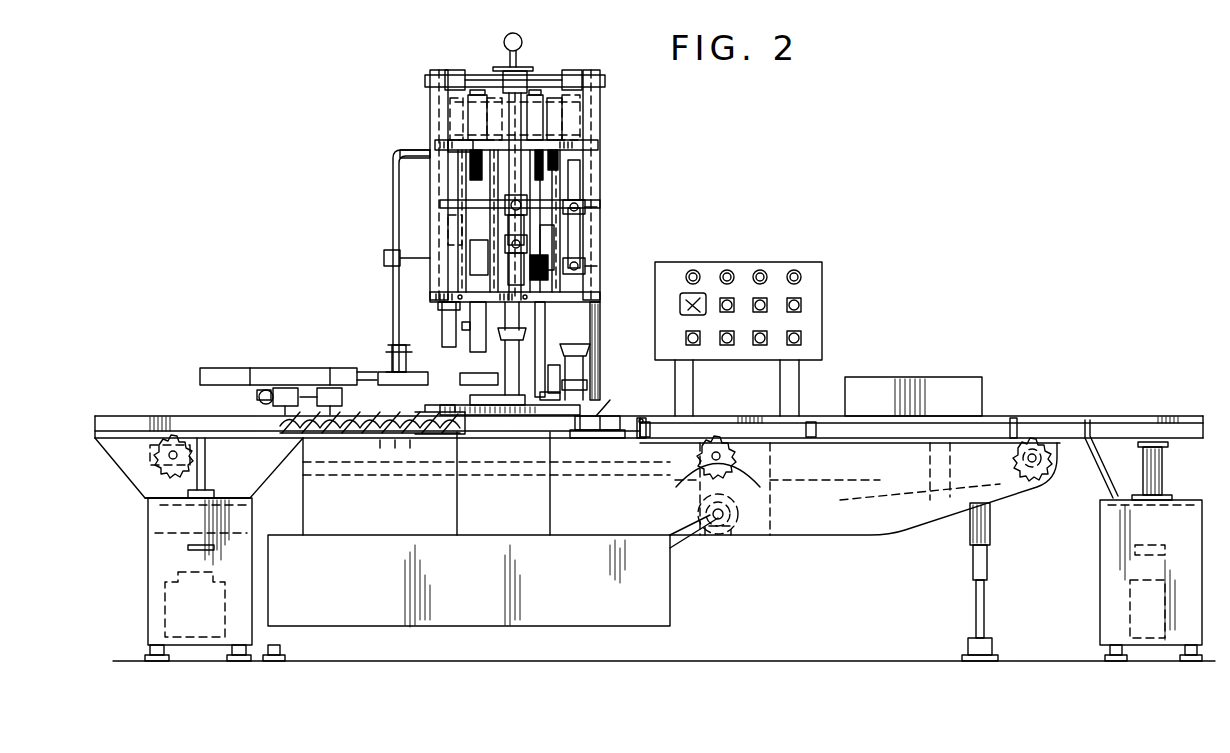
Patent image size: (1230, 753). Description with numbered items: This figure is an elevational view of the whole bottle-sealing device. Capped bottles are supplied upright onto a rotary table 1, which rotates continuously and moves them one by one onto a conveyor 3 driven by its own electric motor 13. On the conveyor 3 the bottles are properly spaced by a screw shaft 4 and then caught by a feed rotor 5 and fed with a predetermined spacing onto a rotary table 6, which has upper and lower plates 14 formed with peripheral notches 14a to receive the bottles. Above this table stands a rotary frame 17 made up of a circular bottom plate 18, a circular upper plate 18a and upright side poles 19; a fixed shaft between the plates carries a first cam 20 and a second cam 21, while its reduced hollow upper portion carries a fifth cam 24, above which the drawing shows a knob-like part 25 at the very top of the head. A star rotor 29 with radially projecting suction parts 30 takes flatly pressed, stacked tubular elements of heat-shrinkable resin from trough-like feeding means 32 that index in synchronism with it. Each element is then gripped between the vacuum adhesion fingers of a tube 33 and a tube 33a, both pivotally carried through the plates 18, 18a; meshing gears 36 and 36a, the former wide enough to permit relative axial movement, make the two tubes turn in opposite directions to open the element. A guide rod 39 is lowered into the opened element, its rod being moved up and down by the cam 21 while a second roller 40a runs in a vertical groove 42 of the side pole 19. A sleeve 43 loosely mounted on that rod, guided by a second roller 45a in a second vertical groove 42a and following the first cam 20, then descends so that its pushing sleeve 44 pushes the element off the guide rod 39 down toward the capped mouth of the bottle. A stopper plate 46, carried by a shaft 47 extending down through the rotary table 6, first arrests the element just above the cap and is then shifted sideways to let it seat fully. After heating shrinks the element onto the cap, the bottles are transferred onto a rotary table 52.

The rotary table 1 is at (142, 424).
The conveyor 3 is at (395, 442).
The screw shaft 4 is at (374, 421).
The feed rotor 5 is at (442, 414).
The rotary table 6 is at (469, 553).
The electric motor 13 is at (740, 520).
The upper and lower plates 14 is at (599, 418).
The notches 14a is at (618, 422).
The rotary frame 17 is at (600, 80).
The circular bottom plate 18 is at (590, 302).
The circular upper plate 18a is at (595, 144).
The side poles 19 is at (527, 84).
The first cam 20 is at (586, 266).
The second cam 21 is at (545, 208).
The fifth cam 24 is at (483, 78).
The hand knob 25 is at (522, 40).
The star rotor 29 is at (360, 378).
The suction parts 30 is at (386, 372).
The feeding means 32 is at (304, 370).
The tube 33 is at (406, 252).
The tubes 33a is at (394, 212).
The gear 36 is at (455, 153).
The gear 36a is at (426, 151).
The guide rod 39 is at (580, 385).
The second roller 40a is at (580, 212).
The vertical groove 42 is at (582, 180).
The second vertical groove 42a is at (555, 238).
The sleeve 43 is at (520, 318).
The pushing sleeve 44 is at (525, 346).
The second roller 45a is at (440, 306).
The stopper plate 46 is at (555, 378).
The shaft 47 is at (560, 398).
The rotary table 52 is at (1123, 437).